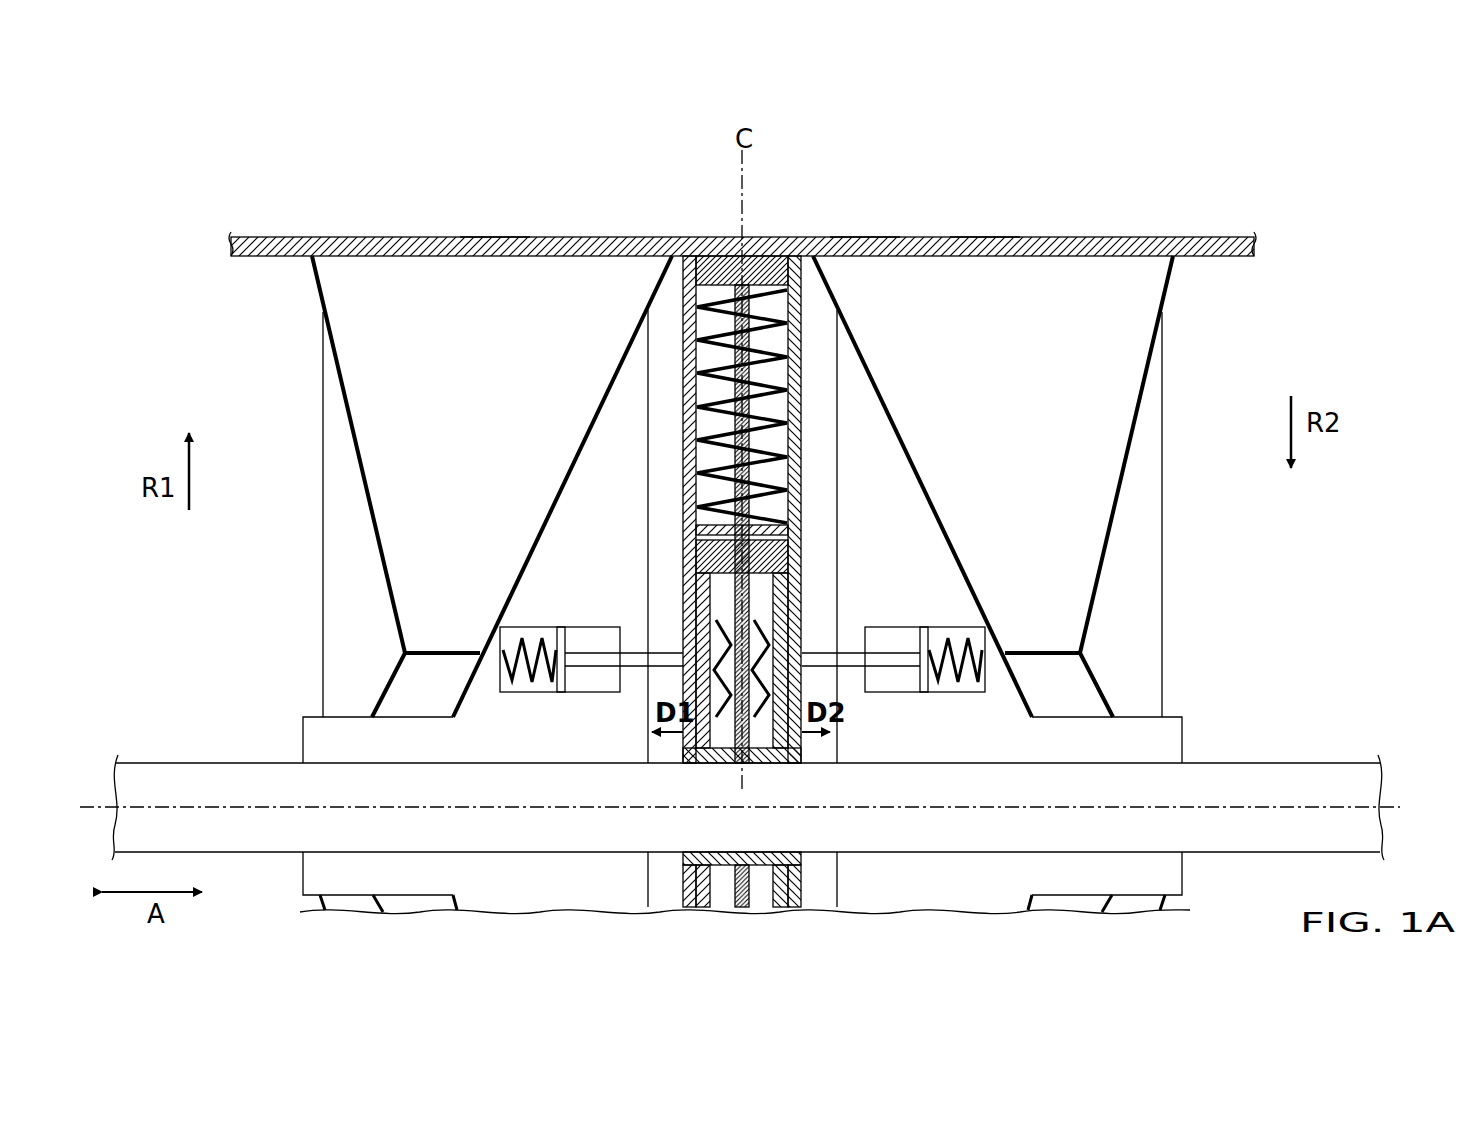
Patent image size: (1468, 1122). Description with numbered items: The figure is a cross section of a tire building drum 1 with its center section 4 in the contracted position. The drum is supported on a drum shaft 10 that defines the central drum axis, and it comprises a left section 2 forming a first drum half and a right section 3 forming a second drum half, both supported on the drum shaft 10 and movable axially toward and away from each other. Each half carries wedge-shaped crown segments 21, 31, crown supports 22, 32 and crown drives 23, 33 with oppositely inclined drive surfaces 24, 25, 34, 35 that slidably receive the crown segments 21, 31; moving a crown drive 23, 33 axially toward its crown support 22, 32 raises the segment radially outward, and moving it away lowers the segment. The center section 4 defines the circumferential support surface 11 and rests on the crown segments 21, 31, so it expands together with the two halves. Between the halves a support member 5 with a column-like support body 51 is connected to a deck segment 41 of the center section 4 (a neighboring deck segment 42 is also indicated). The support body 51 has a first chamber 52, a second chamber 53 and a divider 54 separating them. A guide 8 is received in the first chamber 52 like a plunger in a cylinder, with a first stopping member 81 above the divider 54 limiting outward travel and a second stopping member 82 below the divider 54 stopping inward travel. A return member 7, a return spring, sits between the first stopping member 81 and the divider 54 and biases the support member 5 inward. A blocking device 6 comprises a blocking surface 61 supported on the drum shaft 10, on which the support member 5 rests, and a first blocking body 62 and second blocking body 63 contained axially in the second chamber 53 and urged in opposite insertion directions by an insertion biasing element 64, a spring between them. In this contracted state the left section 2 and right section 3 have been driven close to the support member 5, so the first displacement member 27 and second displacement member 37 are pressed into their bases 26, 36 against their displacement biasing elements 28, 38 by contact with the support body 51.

The tire building drum 1 is at (187, 158).
The left section 2 is at (457, 509).
The right section 3 is at (1036, 509).
The center section 4 is at (565, 237).
The support member 5 is at (722, 529).
The blocking device 6 is at (690, 740).
The return member 7 is at (716, 262).
The guide 8 is at (800, 412).
The drum shaft 10 is at (155, 780).
The circumferential support surface 11 is at (493, 237).
The crown segment 21 is at (330, 318).
The crown support 22 is at (345, 580).
The crown drive 23 is at (320, 737).
The drive surface 24 is at (365, 490).
The drive surface 25 is at (558, 492).
The base 26 is at (574, 691).
The first displacement member 27 is at (600, 660).
The displacement biasing element 28 is at (508, 672).
The crown segment 31 is at (1130, 333).
The crown support 32 is at (1142, 584).
The crown drive 33 is at (1168, 745).
The drive surface 34 is at (1110, 520).
The drive surface 35 is at (930, 495).
The base 36 is at (915, 691).
The second displacement member 37 is at (850, 658).
The displacement biasing element 38 is at (985, 672).
The deck segment 41 is at (862, 237).
The second plate portion 42 is at (983, 237).
The support body 51 is at (683, 375).
The first chamber 52 is at (690, 330).
The second chamber 53 is at (683, 566).
The divider 54 is at (716, 515).
The blocking surface 61 is at (753, 767).
The first blocking body 62 is at (697, 767).
The second blocking body 63 is at (783, 767).
The insertion biasing element 64 is at (720, 598).
The first stopping member 81 is at (779, 262).
The second stopping member 82 is at (788, 548).